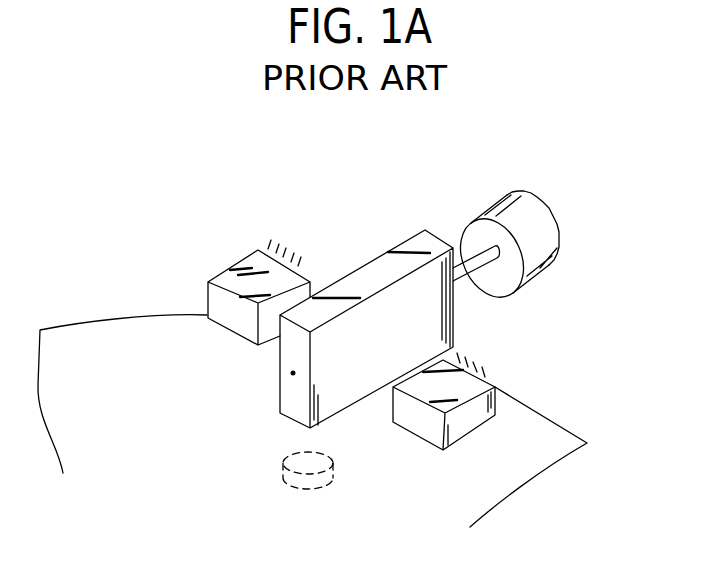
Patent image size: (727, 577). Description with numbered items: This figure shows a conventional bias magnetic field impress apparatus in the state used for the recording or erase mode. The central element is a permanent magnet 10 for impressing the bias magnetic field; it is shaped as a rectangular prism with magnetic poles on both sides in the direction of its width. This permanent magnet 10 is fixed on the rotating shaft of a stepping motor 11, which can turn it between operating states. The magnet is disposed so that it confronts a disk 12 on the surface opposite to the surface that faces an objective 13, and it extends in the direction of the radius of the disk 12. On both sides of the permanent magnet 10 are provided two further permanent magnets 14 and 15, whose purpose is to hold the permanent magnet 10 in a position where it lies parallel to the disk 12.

The permanent magnet 10 is at (403, 243).
The stepping motor 11 is at (543, 275).
The disk 12 is at (530, 467).
The objective 13 is at (333, 477).
The permanent magnet 14 is at (485, 363).
The permanent magnet 15 is at (285, 238).